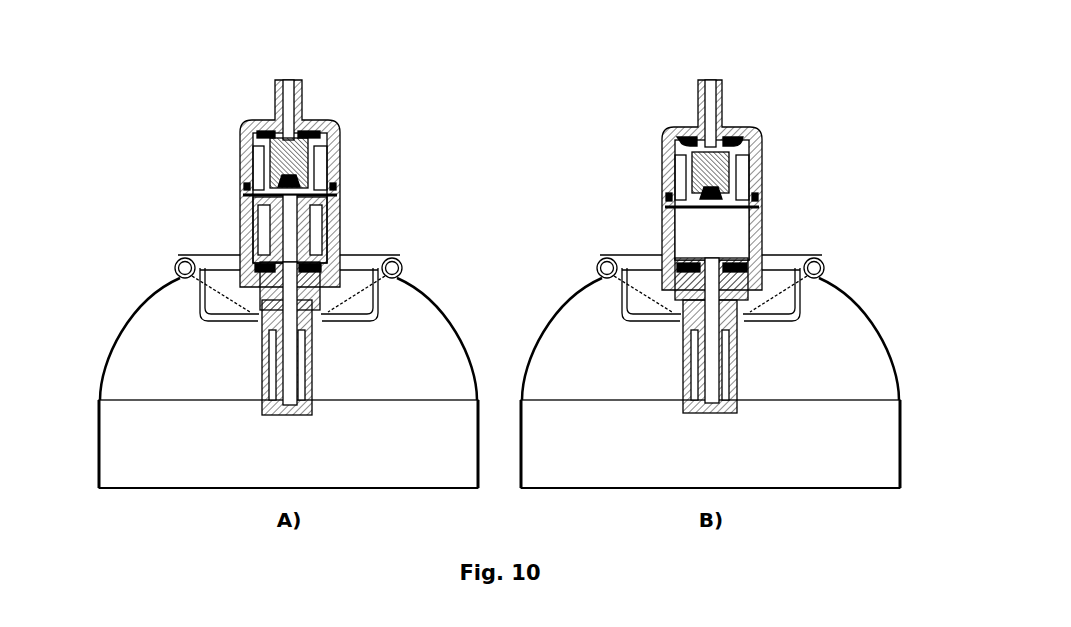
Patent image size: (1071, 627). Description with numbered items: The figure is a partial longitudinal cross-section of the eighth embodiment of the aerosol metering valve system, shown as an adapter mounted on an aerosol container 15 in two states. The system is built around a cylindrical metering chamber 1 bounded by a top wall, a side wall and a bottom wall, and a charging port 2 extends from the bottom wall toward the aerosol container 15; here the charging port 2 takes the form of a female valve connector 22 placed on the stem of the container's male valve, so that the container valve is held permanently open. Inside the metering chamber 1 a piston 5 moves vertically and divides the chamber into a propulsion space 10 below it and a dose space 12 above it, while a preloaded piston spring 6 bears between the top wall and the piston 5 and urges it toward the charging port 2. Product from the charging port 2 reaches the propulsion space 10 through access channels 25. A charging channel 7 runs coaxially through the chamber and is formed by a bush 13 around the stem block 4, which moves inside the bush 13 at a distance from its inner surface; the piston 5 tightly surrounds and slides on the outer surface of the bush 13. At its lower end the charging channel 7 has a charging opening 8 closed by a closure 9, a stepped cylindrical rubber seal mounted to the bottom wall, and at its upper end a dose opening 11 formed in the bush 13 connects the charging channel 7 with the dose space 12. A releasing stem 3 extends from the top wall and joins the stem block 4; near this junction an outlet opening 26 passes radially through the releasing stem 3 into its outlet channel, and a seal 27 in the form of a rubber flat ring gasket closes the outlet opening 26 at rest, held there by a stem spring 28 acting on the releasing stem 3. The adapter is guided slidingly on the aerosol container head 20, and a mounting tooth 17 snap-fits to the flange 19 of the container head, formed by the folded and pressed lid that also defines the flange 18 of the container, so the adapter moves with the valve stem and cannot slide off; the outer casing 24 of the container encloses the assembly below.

The metering chamber 1 is at (333, 177).
The charging port 2 is at (322, 238).
The releasing stem 3 is at (818, 93).
The stem block 4 is at (811, 172).
The piston 5 is at (305, 191).
The piston spring 6 is at (314, 166).
The charging channel 7 is at (593, 196).
The charging opening 8 is at (297, 201).
The closure 9 is at (609, 262).
The propulsion space 10 is at (801, 185).
The dose opening 11 is at (316, 148).
The dose space 12 is at (263, 180).
The bush 13 is at (836, 193).
The aerosol container 15 is at (98, 381).
The mounting tooth 17 is at (253, 290).
The flange 18 is at (172, 266).
The flange of the aerosol container head 19 is at (768, 304).
The aerosol container head 20 is at (807, 335).
The female valve connector 22 is at (307, 243).
The outer casing 24 is at (730, 383).
The access channels 25 is at (244, 188).
The outlet opening 26 is at (808, 112).
The seal 27 is at (807, 157).
The stem spring 28 is at (280, 182).